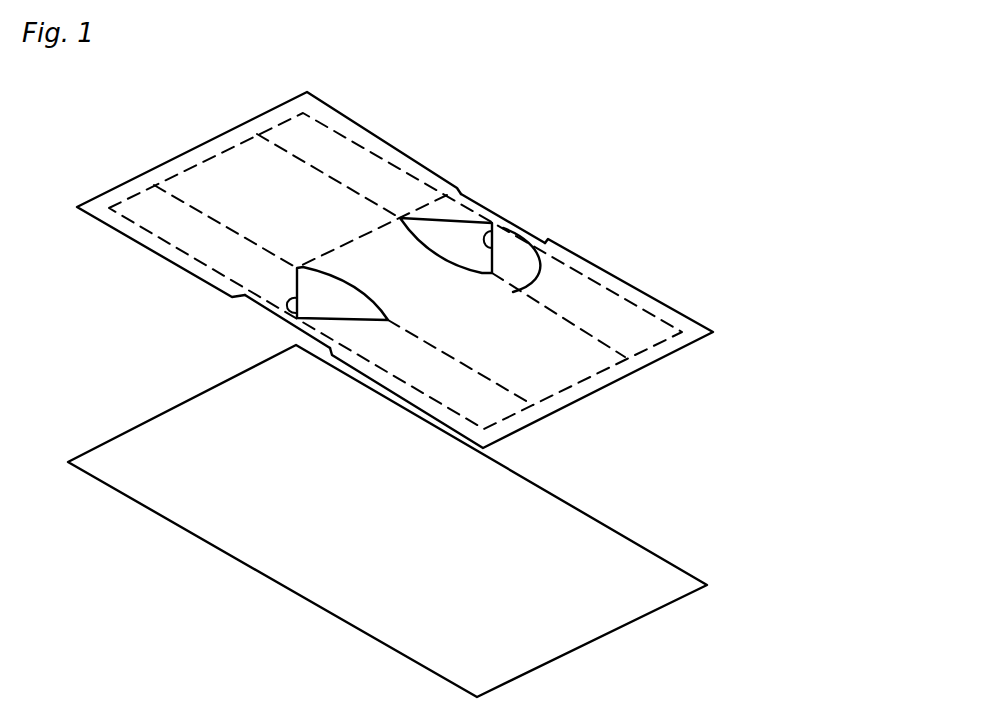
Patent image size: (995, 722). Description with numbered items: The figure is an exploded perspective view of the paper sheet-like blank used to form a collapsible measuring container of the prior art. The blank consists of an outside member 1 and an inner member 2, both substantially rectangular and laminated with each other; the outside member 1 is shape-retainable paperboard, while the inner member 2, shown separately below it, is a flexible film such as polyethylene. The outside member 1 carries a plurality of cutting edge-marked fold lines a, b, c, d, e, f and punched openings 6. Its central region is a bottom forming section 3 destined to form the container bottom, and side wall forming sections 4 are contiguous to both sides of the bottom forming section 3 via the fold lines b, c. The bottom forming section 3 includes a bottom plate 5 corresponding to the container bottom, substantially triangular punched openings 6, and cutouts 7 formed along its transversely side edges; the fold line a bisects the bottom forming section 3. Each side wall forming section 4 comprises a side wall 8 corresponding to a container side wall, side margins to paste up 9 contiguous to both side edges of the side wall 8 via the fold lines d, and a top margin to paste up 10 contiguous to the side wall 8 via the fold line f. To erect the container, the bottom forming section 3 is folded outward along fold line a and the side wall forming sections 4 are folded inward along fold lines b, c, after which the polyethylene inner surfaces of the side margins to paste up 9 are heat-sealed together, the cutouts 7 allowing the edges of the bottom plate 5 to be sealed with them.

The outside member 1 is at (395, 263).
The inner member 2 is at (637, 575).
The bottom forming section 3 is at (524, 180).
The side wall forming sections 4 is at (424, 130).
The bottom plate 5 is at (383, 273).
The punched openings 6 is at (513, 225).
The cutouts 7 is at (493, 214).
The side walls 8 is at (247, 202).
The side margins to paste up 9 is at (323, 116).
The top margins to paste up 10 is at (241, 127).
The cutting edge-marked fold line a is at (398, 220).
The cutting edge-marked fold line b is at (344, 242).
The cutting edge-marked fold line c is at (558, 253).
The cutting edge-marked fold line d is at (166, 234).
The cutting edge-marked fold line e is at (594, 330).
The cutting edge-marked fold line f is at (160, 183).